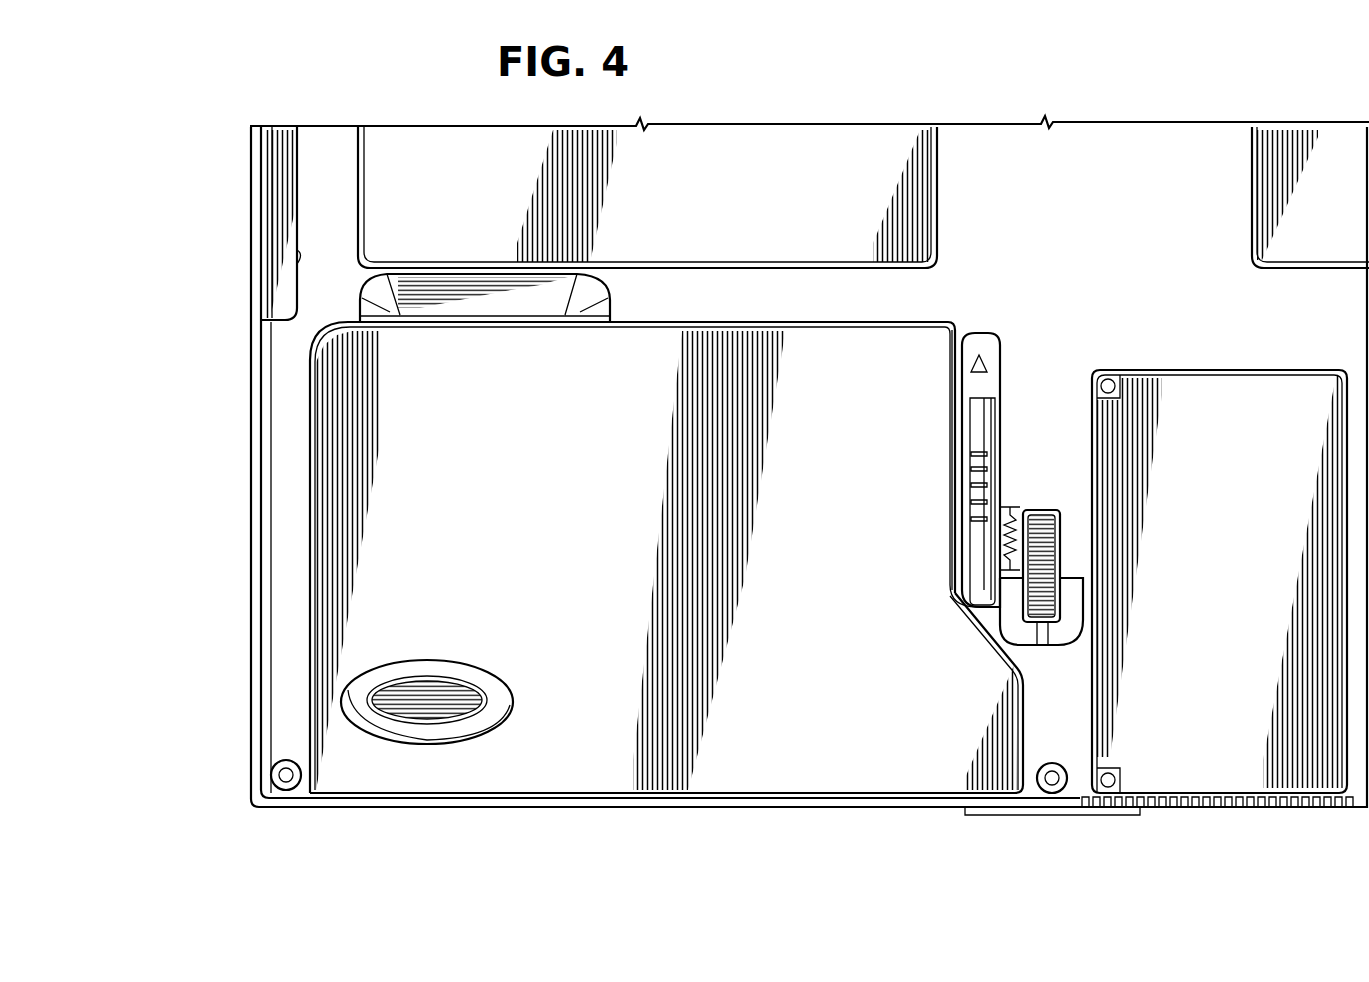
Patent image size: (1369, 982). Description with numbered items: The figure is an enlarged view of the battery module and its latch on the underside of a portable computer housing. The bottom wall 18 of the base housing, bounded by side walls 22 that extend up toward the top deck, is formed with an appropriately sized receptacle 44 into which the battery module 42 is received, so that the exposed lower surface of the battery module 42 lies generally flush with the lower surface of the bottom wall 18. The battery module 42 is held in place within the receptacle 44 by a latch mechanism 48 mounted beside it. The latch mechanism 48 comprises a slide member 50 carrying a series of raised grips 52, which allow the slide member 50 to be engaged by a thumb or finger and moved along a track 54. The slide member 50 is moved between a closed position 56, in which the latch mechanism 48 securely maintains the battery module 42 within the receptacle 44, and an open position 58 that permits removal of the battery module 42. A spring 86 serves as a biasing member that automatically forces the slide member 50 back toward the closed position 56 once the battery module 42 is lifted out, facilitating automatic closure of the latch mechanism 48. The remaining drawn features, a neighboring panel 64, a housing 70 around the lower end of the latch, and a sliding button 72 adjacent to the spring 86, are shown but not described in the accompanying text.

The bottom wall 18 is at (327, 300).
The side walls 22 is at (253, 558).
The battery module 42 is at (868, 752).
The receptacle 44 is at (1020, 732).
The latch mechanism 48 is at (968, 462).
The slide member 50 is at (992, 435).
The raised grips 52 is at (989, 487).
The track 54 is at (968, 383).
The closed position 56 is at (940, 592).
The open position 58 is at (953, 354).
The access panel 64 is at (1068, 648).
The latch housing 70 is at (1072, 622).
The slider button 72 is at (1052, 552).
The spring 86 is at (1012, 508).